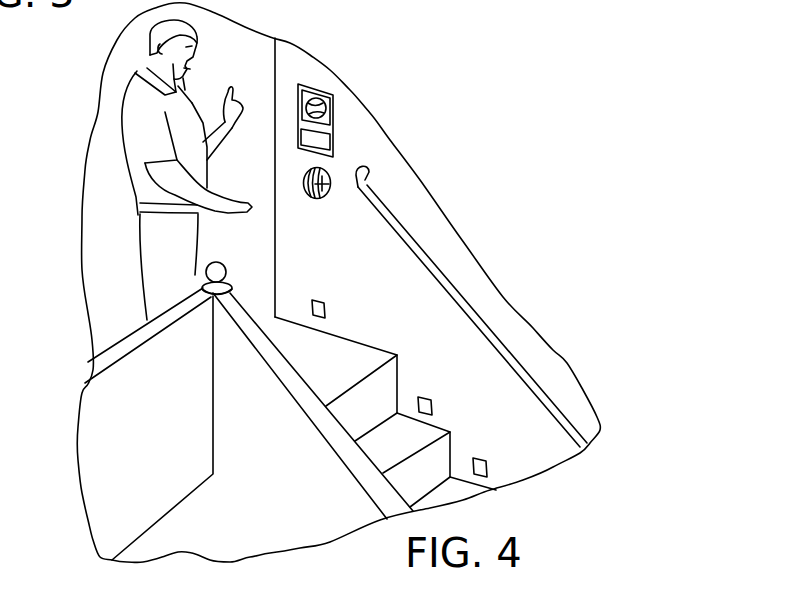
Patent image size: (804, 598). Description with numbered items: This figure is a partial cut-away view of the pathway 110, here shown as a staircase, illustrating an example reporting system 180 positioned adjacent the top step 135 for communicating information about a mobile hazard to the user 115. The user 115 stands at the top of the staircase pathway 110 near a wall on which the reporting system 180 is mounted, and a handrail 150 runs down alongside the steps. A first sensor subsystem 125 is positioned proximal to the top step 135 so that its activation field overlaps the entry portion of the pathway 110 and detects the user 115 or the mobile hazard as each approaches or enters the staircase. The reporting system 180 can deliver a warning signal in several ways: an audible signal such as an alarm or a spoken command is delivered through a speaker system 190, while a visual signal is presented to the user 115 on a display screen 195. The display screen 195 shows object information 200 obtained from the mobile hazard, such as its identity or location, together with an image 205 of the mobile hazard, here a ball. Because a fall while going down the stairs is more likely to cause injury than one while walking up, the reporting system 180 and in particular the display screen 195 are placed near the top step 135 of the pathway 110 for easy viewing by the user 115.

The pathway 110 is at (514, 462).
The user 115 is at (129, 108).
The first sensor subsystem 125 is at (318, 310).
The top step 135 is at (340, 363).
The handrail 150 is at (422, 257).
The reporting system 180 is at (322, 92).
The speaker system 190 is at (330, 184).
The display screen 195 is at (335, 106).
The object information 200 is at (335, 146).
The image 205 is at (308, 96).